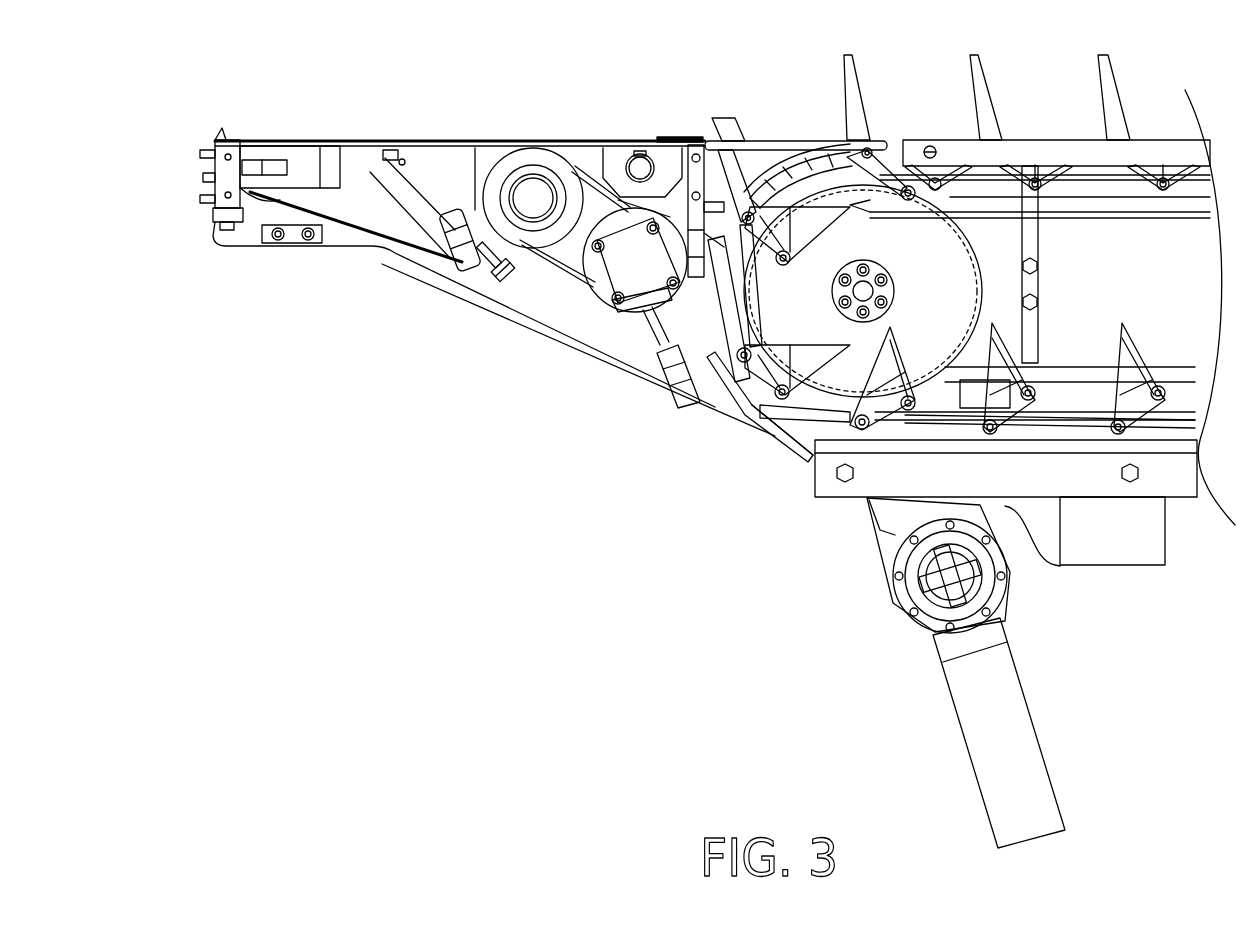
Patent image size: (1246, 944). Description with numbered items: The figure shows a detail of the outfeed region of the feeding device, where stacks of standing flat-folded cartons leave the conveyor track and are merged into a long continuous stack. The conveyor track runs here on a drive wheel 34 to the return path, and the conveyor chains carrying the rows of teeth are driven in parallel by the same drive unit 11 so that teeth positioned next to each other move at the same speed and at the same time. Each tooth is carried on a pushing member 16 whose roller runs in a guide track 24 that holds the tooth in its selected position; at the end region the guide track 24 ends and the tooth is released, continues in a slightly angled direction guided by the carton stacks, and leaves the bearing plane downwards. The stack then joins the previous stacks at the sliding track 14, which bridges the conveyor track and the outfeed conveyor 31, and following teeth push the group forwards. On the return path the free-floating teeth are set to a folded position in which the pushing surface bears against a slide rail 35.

The outfeed conveyor 31 is at (485, 106).
The sliding track 14 is at (758, 143).
The guide track 24 is at (1098, 190).
The drive wheel 34 is at (828, 378).
The slide rail 35 is at (1105, 447).
The pushing member 16 is at (1073, 462).
The drive unit 11 is at (997, 725).